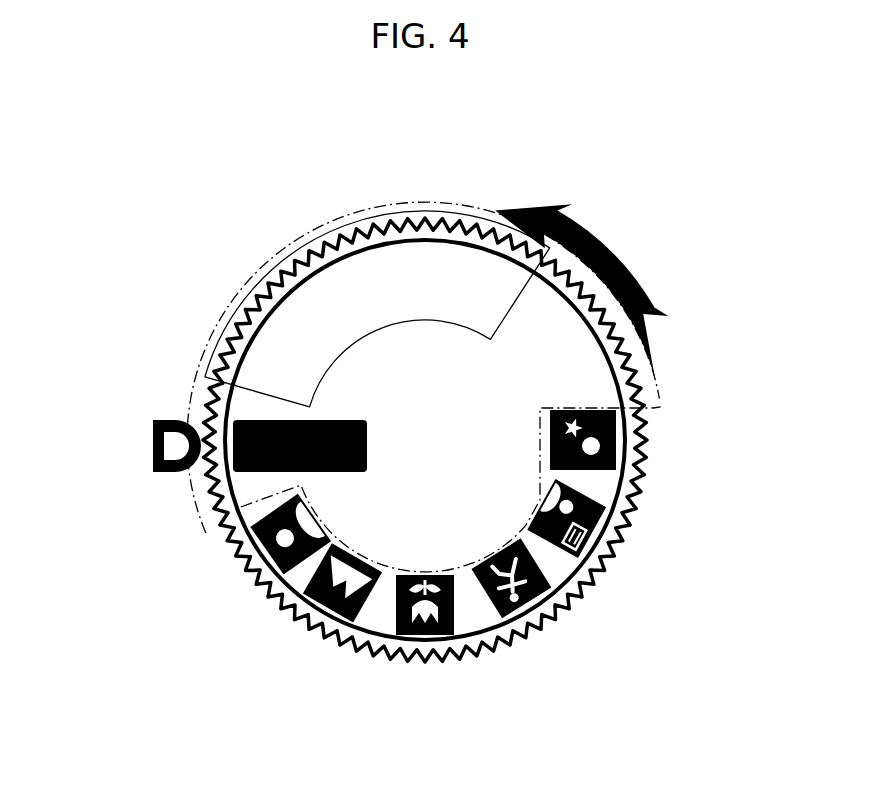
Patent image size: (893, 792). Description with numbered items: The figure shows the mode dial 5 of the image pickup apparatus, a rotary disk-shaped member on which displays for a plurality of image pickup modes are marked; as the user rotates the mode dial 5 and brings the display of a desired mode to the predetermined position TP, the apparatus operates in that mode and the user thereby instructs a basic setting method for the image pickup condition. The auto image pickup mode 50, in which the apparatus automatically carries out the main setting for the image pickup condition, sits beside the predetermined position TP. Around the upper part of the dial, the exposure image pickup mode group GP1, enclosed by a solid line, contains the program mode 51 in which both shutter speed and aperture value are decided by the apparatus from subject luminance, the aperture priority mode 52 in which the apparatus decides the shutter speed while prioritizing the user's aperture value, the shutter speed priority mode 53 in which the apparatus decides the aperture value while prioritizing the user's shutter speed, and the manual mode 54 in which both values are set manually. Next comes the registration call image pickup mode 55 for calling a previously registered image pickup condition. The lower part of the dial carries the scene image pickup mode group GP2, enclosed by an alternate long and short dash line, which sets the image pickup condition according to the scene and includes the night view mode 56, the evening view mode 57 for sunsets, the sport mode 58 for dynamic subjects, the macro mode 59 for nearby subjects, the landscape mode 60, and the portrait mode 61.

The mode dial 5 is at (656, 129).
The exposure image pickup mode group GP1 is at (405, 214).
The scene image pickup mode group GP2 is at (476, 676).
The predetermined position TP is at (150, 448).
The auto image pickup mode 50 is at (232, 434).
The program mode 51 is at (258, 354).
The aperture priority mode 52 is at (325, 296).
The shutter speed priority mode 53 is at (413, 263).
The manual mode 54 is at (483, 270).
The registration call image pickup mode 55 is at (566, 350).
The night view mode 56 is at (620, 440).
The evening view mode 57 is at (617, 545).
The sport mode 58 is at (537, 640).
The macro mode 59 is at (412, 637).
The landscape mode 60 is at (307, 600).
The portrait mode 61 is at (260, 548).